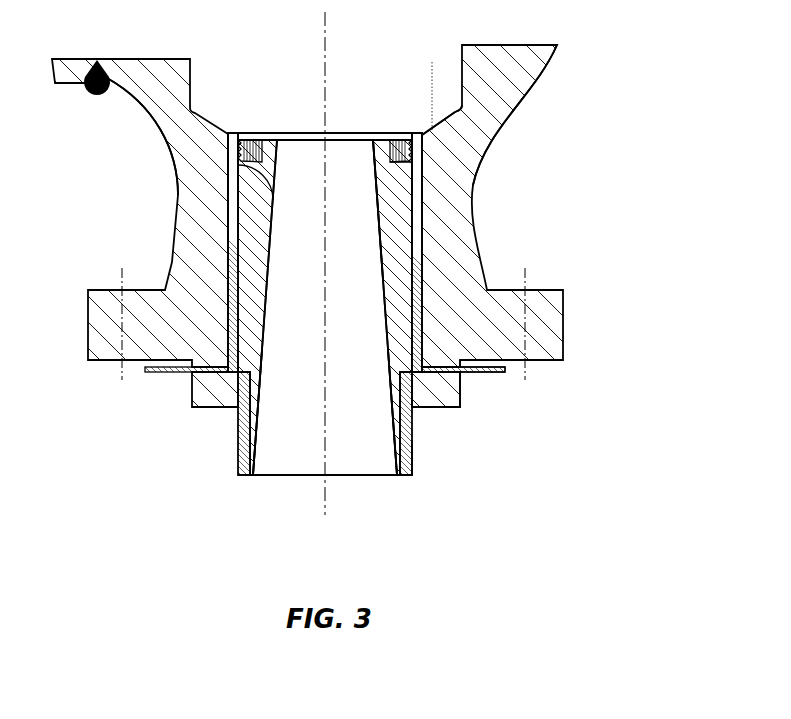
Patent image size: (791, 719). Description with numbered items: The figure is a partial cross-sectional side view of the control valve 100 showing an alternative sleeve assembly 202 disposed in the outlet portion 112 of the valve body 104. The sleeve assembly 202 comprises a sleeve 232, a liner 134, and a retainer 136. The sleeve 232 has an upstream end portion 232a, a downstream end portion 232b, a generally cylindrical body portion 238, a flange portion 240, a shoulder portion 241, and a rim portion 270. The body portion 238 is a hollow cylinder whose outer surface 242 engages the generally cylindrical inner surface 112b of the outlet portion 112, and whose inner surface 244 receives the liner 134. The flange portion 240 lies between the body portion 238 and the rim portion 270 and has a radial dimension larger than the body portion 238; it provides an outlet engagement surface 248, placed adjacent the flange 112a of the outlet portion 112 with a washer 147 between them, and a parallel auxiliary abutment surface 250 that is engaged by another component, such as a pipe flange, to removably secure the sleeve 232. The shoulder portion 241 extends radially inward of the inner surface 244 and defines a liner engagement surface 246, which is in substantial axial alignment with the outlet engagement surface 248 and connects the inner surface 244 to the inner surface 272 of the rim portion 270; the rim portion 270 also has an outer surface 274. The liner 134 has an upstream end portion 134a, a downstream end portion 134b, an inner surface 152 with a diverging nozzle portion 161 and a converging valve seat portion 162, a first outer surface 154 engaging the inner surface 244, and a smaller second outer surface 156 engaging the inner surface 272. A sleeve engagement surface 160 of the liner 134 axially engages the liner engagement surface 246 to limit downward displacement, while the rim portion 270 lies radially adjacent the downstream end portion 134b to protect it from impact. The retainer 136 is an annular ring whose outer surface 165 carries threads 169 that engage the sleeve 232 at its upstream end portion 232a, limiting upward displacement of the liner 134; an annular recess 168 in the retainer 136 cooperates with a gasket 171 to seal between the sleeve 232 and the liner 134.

The control valve 100 is at (624, 122).
The valve body 104 is at (564, 53).
The outlet portion 112 is at (185, 241).
The flange 112a is at (553, 328).
The inner surface 112b is at (228, 164).
The liner 134 is at (397, 250).
The upstream end portion 134a is at (380, 173).
The downstream end portion 134b is at (263, 400).
The retainer 136 is at (408, 133).
The washer 147 is at (472, 370).
The inner surface 152 is at (377, 248).
The first outer surface 154 is at (228, 261).
The second outer surface 156 is at (237, 428).
The sleeve engagement surface 160 is at (262, 388).
The nozzle portion 161 is at (268, 312).
The valve seat portion 162 is at (303, 133).
The outer surface 165 is at (236, 156).
The annular recess 168 is at (250, 185).
The threads 169 is at (427, 137).
The gasket 171 is at (406, 158).
The sleeve assembly 202 is at (463, 417).
The sleeve 232 is at (228, 306).
The upstream end portion 232a is at (230, 140).
The downstream end portion 232b is at (190, 373).
The body portion 238 is at (232, 208).
The flange portion 240 is at (200, 410).
The shoulder portion 241 is at (421, 470).
The outer surface 242 is at (428, 178).
The inner surface 244 is at (396, 287).
The liner engagement surface 246 is at (406, 366).
The outlet engagement surface 248 is at (458, 355).
The auxiliary abutment surface 250 is at (448, 409).
The rim portion 270 is at (438, 473).
The inner surface 272 is at (394, 421).
The outer surface 274 is at (240, 455).